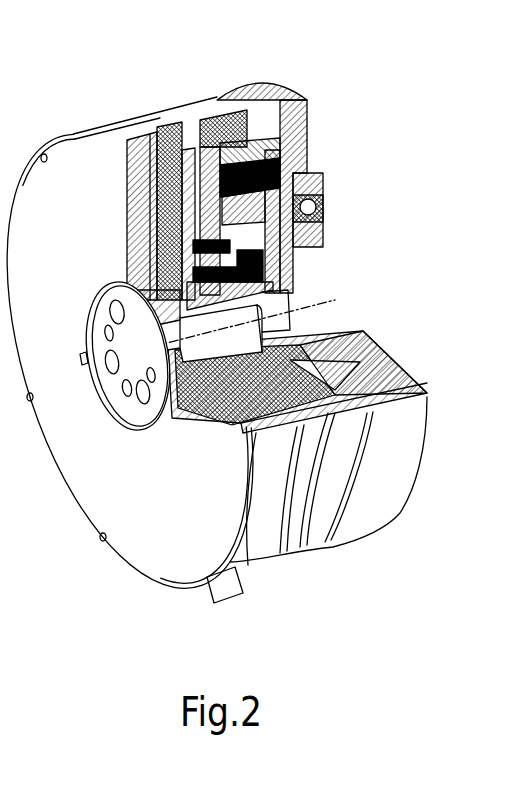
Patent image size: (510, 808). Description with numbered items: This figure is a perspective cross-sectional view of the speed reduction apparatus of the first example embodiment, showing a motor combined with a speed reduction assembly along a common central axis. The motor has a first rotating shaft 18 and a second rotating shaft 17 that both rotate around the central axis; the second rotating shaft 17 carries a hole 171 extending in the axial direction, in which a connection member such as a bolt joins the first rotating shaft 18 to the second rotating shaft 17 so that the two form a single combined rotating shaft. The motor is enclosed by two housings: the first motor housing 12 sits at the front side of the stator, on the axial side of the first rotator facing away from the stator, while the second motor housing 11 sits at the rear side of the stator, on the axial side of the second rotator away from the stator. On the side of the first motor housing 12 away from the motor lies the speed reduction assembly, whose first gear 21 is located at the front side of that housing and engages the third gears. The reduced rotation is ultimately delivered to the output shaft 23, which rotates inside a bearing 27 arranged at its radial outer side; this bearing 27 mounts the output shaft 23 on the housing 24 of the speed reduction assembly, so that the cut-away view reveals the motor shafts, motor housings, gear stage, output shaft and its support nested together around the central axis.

The second motor housing 11 is at (143, 128).
The first motor housing 12 is at (178, 123).
The second rotating shaft 17 is at (100, 300).
The hole 171 is at (143, 397).
The first rotating shaft 18 is at (262, 300).
The first gear 21 is at (232, 92).
The output shaft 23 is at (325, 240).
The housing 24 is at (272, 97).
The bearing 27 is at (320, 204).